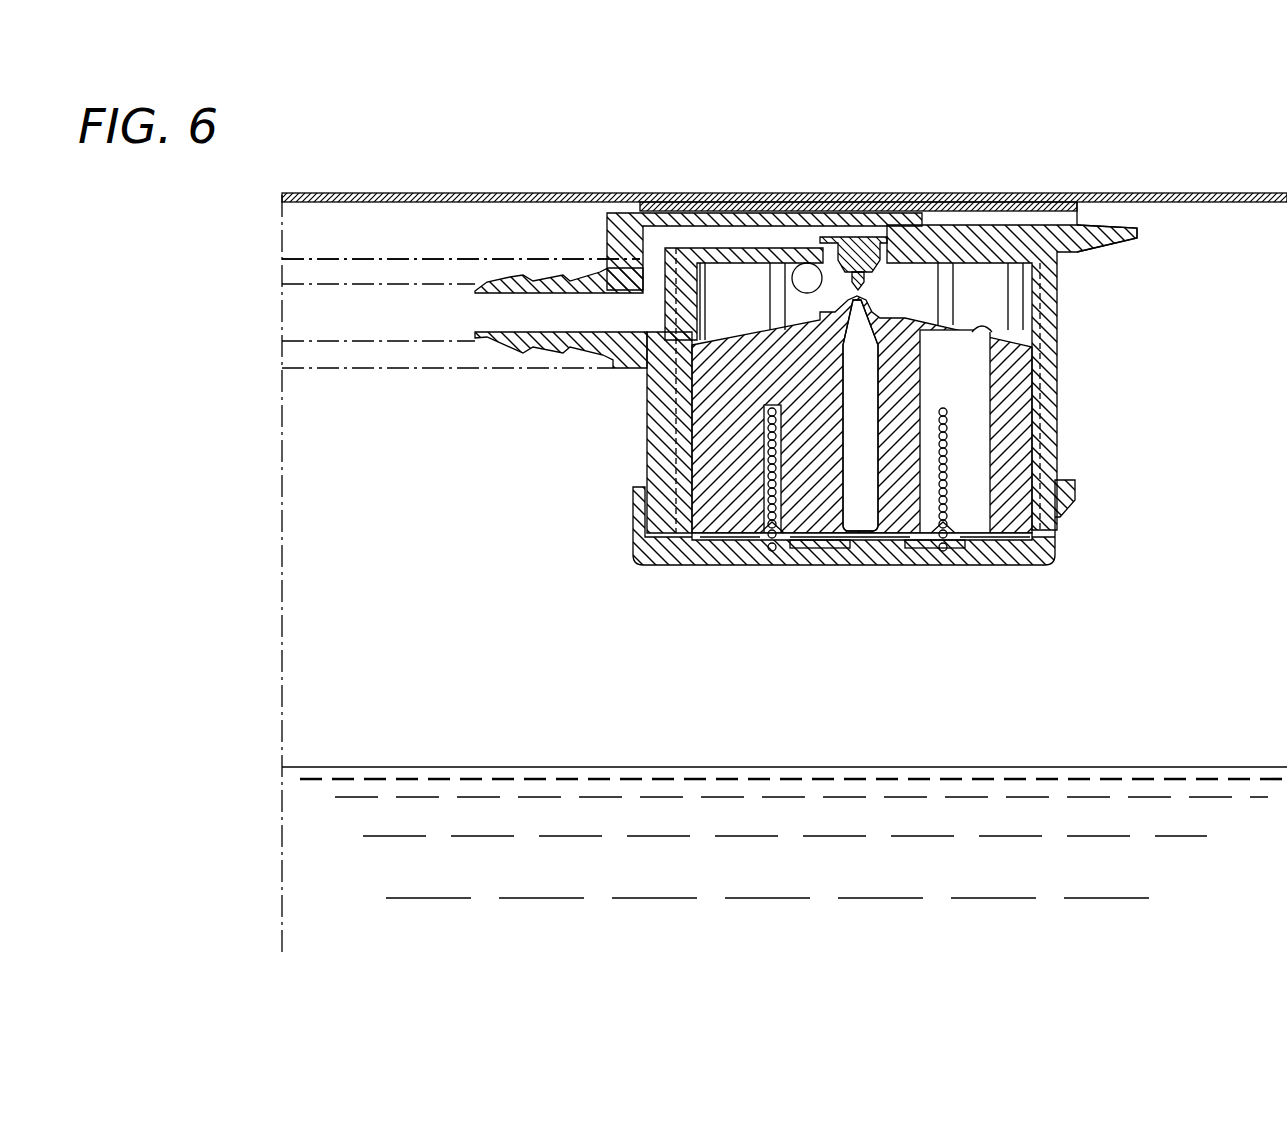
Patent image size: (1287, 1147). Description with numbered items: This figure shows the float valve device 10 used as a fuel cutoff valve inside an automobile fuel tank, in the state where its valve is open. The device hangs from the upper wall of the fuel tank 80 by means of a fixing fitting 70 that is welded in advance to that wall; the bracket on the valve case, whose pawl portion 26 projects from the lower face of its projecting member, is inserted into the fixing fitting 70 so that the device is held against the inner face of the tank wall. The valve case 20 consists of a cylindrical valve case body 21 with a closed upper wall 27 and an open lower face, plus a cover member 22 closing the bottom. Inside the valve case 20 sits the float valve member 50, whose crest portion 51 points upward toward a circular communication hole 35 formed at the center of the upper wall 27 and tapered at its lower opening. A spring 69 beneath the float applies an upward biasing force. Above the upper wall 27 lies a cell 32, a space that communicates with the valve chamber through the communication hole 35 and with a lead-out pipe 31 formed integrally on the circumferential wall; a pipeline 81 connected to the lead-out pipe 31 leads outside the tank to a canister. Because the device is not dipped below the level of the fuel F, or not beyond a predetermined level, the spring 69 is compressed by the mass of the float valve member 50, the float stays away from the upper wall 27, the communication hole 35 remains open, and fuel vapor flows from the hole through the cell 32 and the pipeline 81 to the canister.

The float valve device 10 is at (1130, 343).
The valve case 20 is at (782, 416).
The valve case body 21 is at (647, 433).
The cover member 22 is at (807, 549).
The pawl portion 26 is at (1118, 247).
The upper wall 27 is at (757, 262).
The lead-out pipe 31 is at (530, 275).
The cell 32 is at (680, 237).
The communication hole 35 is at (855, 262).
The float valve member 50 is at (914, 340).
The crest portion 51 is at (868, 302).
The spring 69 is at (780, 550).
The fixing fitting 70 is at (992, 213).
The upper wall of the fuel tank 80 is at (440, 192).
The pipeline 81 is at (338, 258).
The fuel F is at (372, 822).